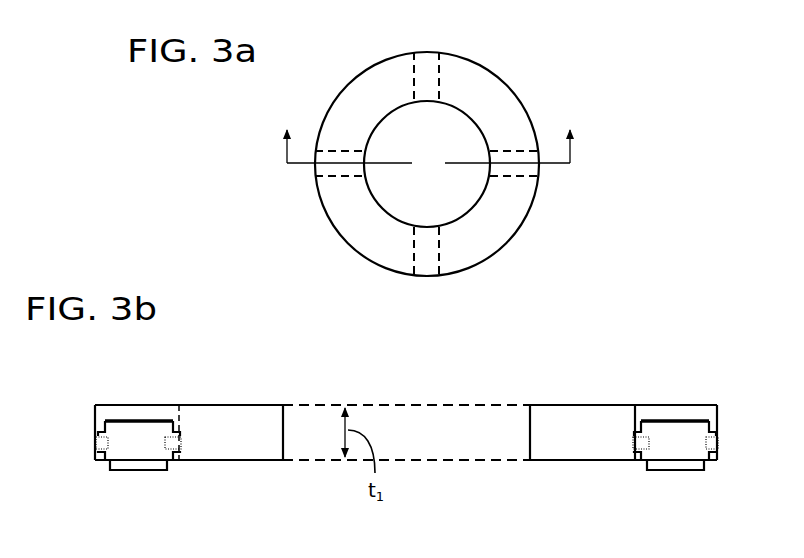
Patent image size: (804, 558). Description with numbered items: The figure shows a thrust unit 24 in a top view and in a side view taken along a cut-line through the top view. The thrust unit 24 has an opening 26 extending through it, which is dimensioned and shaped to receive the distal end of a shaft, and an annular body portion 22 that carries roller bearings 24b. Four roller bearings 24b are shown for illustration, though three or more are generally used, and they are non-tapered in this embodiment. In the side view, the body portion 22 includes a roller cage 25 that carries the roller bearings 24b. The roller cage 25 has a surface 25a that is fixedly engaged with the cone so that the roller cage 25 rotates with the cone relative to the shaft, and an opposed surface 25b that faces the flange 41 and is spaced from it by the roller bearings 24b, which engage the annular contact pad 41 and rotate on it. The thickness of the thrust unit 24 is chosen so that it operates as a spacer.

In FIG. 3a, the annular body portion 22 is at (349, 222).
In FIG. 3b, the annular body portion 22 is at (406, 430).
In FIG. 3a, the thrust unit 24 is at (455, 187).
In FIG. 3a, the roller bearings 24b is at (525, 168).
In FIG. 3b, the roller bearings 24b is at (141, 448).
In FIG. 3b, the roller cage 25 is at (240, 449).
In FIG. 3b, the surface 25a is at (250, 403).
In FIG. 3b, the opposed surface 25b is at (265, 464).
In FIG. 3a, the opening 26 is at (441, 176).
In FIG. 3b, the opening 26 is at (385, 398).
In FIG. 3b, the flange 41 is at (134, 418).